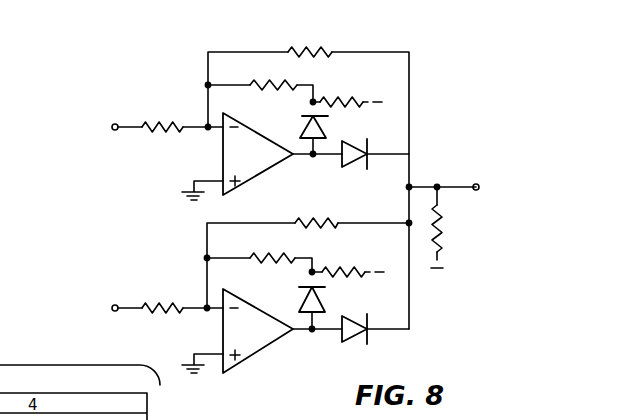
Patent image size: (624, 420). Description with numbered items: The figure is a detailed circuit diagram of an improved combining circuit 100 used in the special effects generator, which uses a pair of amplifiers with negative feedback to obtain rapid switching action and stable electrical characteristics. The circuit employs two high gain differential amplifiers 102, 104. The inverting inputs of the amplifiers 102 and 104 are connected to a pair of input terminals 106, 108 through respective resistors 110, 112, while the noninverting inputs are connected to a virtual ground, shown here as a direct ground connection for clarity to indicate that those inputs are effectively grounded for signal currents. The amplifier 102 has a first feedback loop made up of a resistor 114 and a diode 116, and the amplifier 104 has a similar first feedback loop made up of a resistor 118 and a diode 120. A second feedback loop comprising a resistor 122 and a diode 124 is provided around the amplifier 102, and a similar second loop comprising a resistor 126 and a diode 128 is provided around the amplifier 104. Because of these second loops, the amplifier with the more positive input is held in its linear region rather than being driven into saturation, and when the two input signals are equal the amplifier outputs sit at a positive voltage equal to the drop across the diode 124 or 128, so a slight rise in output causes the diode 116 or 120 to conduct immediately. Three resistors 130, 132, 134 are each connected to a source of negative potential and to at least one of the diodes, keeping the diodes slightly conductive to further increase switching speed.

The combining circuit 100 is at (240, 40).
The high gain differential amplifier 102 is at (279, 172).
The high gain differential amplifier 104 is at (275, 344).
The input terminal 106 is at (115, 123).
The input terminal 108 is at (115, 304).
The resistor 110 is at (156, 133).
The resistor 112 is at (155, 304).
The resistor 114 is at (330, 54).
The diode 116 is at (349, 162).
The resistor 118 is at (334, 225).
The diode 120 is at (367, 334).
The resistor 122 is at (267, 81).
The diode 124 is at (305, 130).
The resistor 126 is at (267, 253).
The diode 128 is at (305, 305).
The resistor 130 is at (476, 211).
The resistor 132 is at (353, 105).
The resistor 134 is at (351, 275).